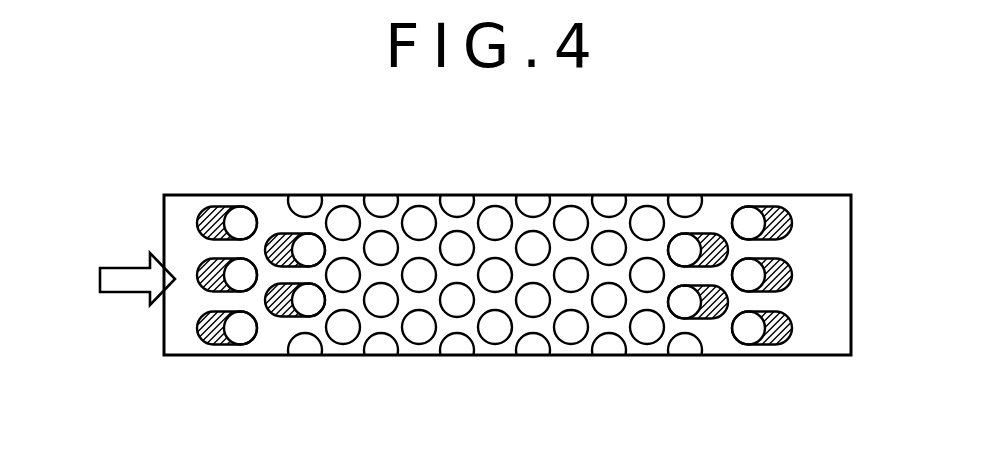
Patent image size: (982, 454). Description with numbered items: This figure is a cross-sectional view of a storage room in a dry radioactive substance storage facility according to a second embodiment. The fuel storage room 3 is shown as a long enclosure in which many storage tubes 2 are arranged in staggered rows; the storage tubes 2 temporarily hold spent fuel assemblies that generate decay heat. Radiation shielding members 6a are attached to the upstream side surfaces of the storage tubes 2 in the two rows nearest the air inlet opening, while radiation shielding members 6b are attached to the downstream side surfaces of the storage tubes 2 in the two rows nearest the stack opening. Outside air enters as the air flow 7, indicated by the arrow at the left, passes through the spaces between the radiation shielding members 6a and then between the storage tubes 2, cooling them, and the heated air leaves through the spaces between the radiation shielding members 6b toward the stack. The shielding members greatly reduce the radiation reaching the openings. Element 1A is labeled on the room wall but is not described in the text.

The perforated plate 1A is at (337, 357).
The storage tubes 2 is at (455, 305).
The fuel storage room 3 is at (547, 323).
The radiation shielding members 6a is at (282, 235).
The radiation shielding members 6b is at (772, 215).
The air flow 7 is at (122, 280).